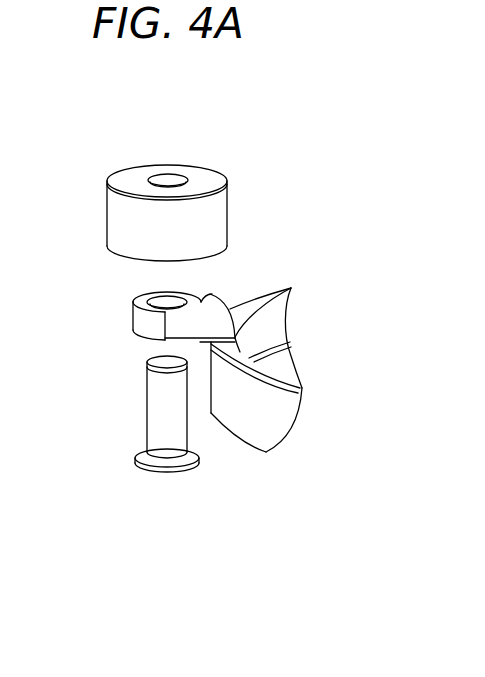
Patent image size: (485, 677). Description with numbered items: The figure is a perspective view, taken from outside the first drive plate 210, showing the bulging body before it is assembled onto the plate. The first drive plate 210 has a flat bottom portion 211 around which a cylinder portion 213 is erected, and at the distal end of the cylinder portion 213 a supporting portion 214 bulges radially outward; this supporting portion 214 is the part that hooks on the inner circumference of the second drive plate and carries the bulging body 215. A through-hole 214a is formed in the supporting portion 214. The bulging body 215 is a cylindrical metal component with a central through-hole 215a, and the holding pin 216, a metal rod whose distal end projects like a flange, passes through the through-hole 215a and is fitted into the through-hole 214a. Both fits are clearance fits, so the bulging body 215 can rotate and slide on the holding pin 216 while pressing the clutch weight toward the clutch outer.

The first drive plate 210 is at (259, 456).
The bottom portion 211 is at (291, 355).
The cylinder portion 213 is at (278, 308).
The supporting portion 214 is at (193, 296).
The through-hole 214a is at (141, 300).
The bulging body 215 is at (122, 183).
The through-hole 215a is at (168, 176).
The holding pin 216 is at (145, 405).